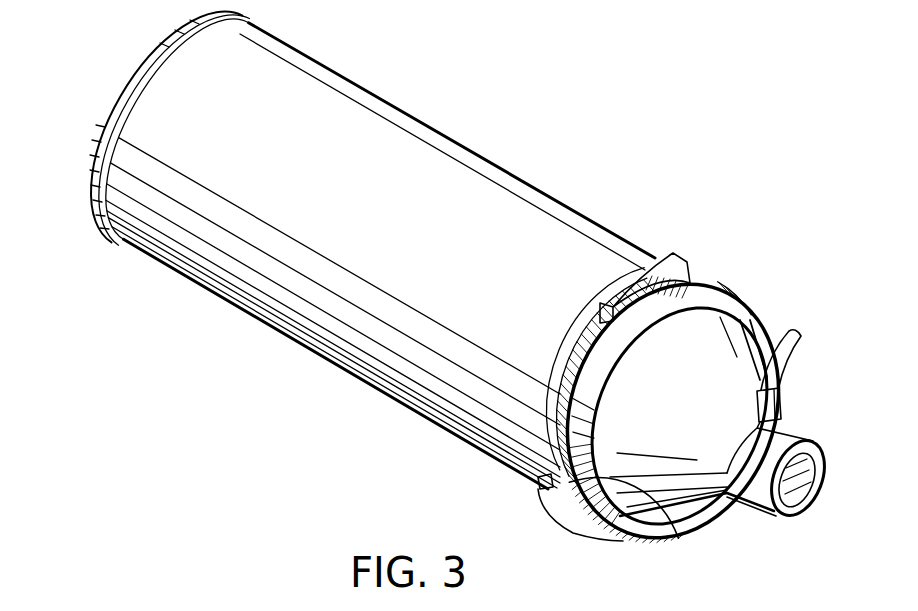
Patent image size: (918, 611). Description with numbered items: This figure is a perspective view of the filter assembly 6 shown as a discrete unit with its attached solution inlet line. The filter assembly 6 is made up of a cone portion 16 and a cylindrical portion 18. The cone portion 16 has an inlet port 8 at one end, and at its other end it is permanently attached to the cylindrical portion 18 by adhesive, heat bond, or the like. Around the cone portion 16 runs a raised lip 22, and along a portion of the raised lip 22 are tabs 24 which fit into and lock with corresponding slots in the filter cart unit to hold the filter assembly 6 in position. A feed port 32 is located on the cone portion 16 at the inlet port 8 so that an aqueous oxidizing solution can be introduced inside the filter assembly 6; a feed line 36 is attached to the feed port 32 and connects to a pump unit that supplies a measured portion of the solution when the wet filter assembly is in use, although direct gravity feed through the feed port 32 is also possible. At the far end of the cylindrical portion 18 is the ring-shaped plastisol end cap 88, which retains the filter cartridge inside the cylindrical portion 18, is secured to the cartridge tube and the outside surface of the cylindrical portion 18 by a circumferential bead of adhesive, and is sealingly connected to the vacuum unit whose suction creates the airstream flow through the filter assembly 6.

The filter assembly 6 is at (599, 142).
The inlet port 8 is at (801, 447).
The cone portion 16 is at (674, 436).
The cylindrical portion 18 is at (371, 222).
The raised lip 22 is at (572, 356).
The tabs 24 is at (677, 253).
The feed port 32 is at (782, 404).
The feed line 36 is at (796, 343).
The plastisol end cap 88 is at (133, 78).